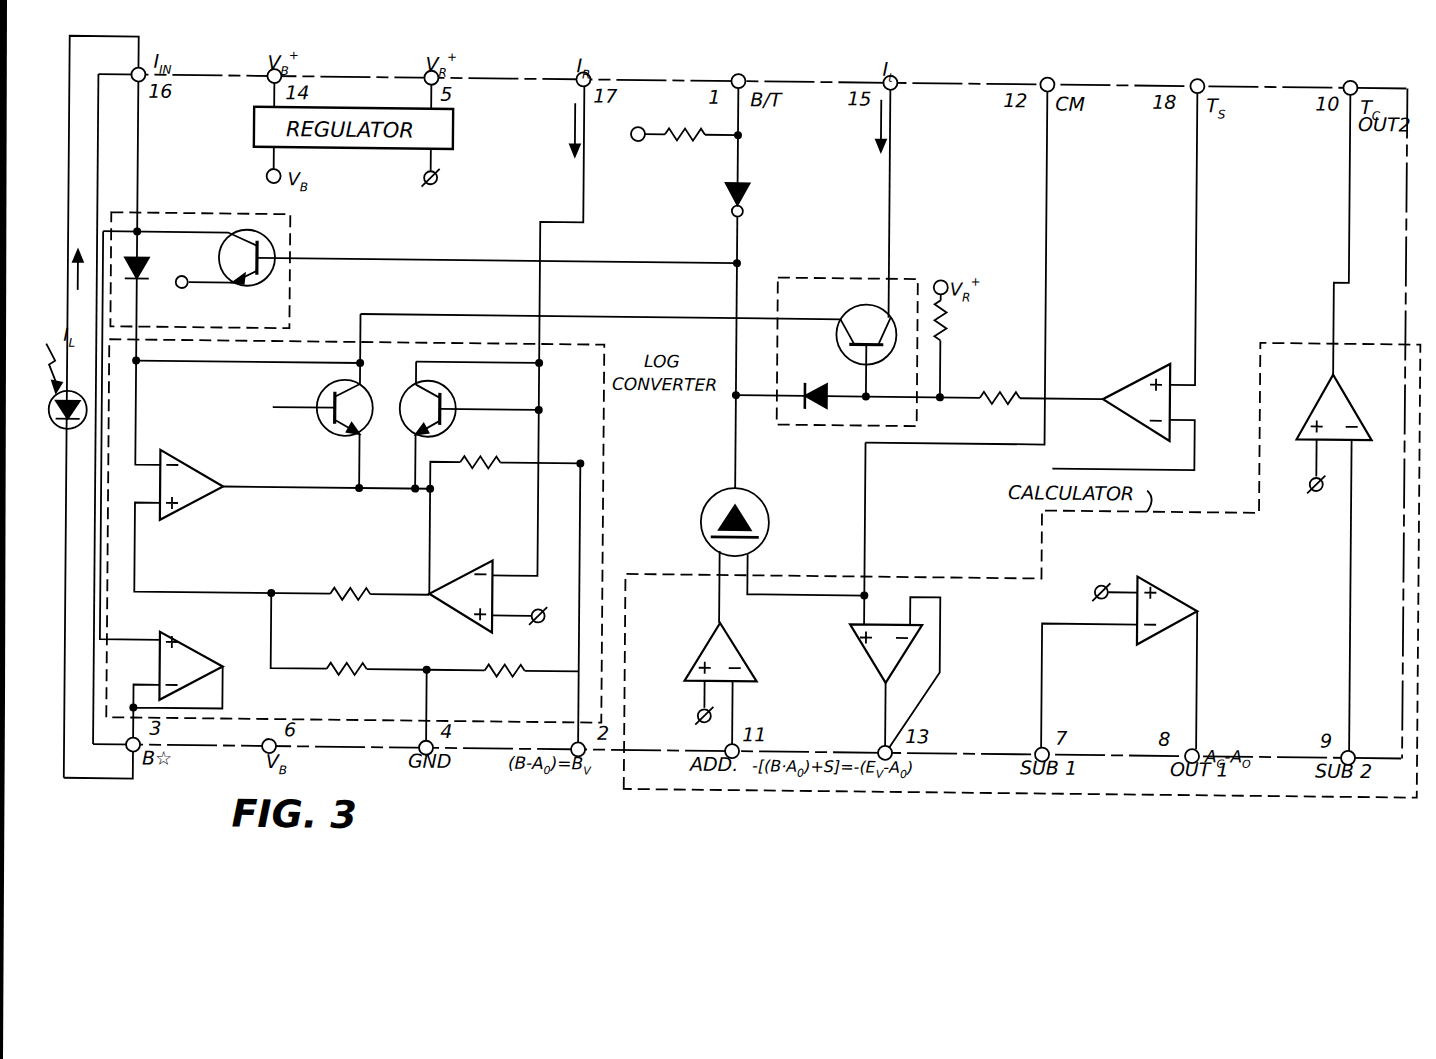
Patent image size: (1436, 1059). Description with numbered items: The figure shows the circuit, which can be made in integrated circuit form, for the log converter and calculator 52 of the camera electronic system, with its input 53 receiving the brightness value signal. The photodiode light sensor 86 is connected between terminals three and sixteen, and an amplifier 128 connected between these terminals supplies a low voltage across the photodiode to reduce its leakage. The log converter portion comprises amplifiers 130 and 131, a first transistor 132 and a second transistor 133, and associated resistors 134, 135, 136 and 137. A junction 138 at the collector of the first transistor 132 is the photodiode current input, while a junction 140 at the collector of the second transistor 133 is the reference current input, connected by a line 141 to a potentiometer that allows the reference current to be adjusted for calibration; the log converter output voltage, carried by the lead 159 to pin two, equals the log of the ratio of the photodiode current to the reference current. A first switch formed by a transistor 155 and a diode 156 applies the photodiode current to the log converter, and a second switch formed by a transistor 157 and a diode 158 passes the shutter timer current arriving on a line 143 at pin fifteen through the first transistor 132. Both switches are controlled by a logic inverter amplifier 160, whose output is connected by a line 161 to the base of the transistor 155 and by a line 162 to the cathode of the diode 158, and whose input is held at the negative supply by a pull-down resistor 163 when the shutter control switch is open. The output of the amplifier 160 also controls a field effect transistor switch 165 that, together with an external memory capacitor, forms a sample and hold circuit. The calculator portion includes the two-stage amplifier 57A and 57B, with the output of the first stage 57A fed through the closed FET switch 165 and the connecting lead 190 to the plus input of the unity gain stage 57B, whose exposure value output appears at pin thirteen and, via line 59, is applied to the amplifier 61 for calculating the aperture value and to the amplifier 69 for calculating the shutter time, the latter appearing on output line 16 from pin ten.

The output line 16 is at (1351, 214).
The log converter and calculator 52 is at (792, 66).
The input 53 is at (590, 758).
The amplifier 57A is at (712, 637).
The amplifier 57B is at (864, 645).
The line 59 is at (885, 738).
The amplifier 61 is at (1178, 584).
The amplifier 69 is at (1330, 367).
The light sensor 86 is at (93, 417).
The amplifier 128 is at (211, 628).
The amplifier 130 is at (201, 465).
The amplifier 131 is at (467, 566).
The first transistor 132 is at (321, 390).
The second transistor 133 is at (453, 390).
The resistor 134 is at (359, 660).
The resistor 135 is at (354, 582).
The resistor 136 is at (489, 455).
The resistor 137 is at (515, 672).
The junction 138 is at (363, 338).
The junction 140 is at (550, 356).
The line 141 is at (542, 283).
The line 143 is at (892, 169).
The transistor 155 is at (267, 240).
The diode 156 is at (152, 261).
The transistor 157 is at (863, 295).
The diode 158 is at (818, 406).
The conductor 159 is at (584, 455).
The logic inverter amplifier 160 is at (748, 184).
The line 161 is at (647, 251).
The line 162 is at (739, 289).
The pull-down resistor 163 is at (692, 137).
The field effect transistor switch 165 is at (765, 499).
The conductor 190 is at (777, 588).